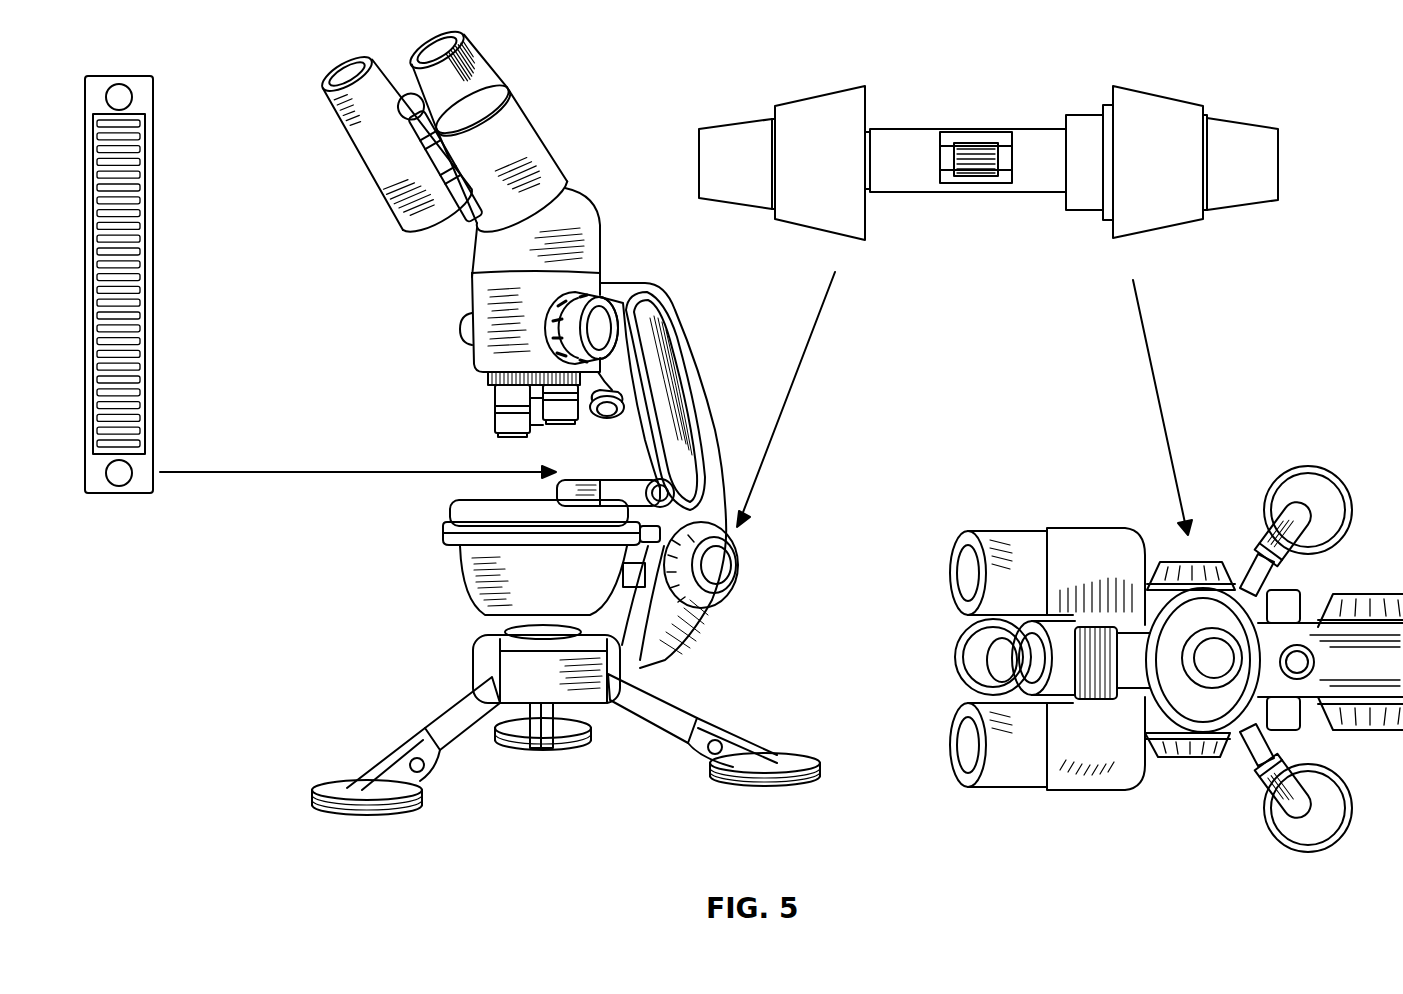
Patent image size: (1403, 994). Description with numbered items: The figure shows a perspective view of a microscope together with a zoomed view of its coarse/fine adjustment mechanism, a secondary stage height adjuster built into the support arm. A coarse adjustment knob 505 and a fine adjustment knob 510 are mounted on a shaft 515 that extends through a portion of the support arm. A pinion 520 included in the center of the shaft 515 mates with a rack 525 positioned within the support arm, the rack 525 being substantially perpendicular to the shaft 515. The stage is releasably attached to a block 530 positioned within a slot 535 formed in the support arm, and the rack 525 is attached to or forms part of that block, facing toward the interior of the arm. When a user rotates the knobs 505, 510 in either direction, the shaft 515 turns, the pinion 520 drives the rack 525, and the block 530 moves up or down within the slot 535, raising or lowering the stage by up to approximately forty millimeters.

The coarse adjustment knob 505 is at (1158, 208).
The fine adjustment knob 510 is at (1228, 188).
The shaft 515 is at (900, 135).
The pinion 520 is at (978, 170).
The rack 525 is at (136, 152).
The block 530 is at (555, 463).
The slot 535 is at (657, 440).